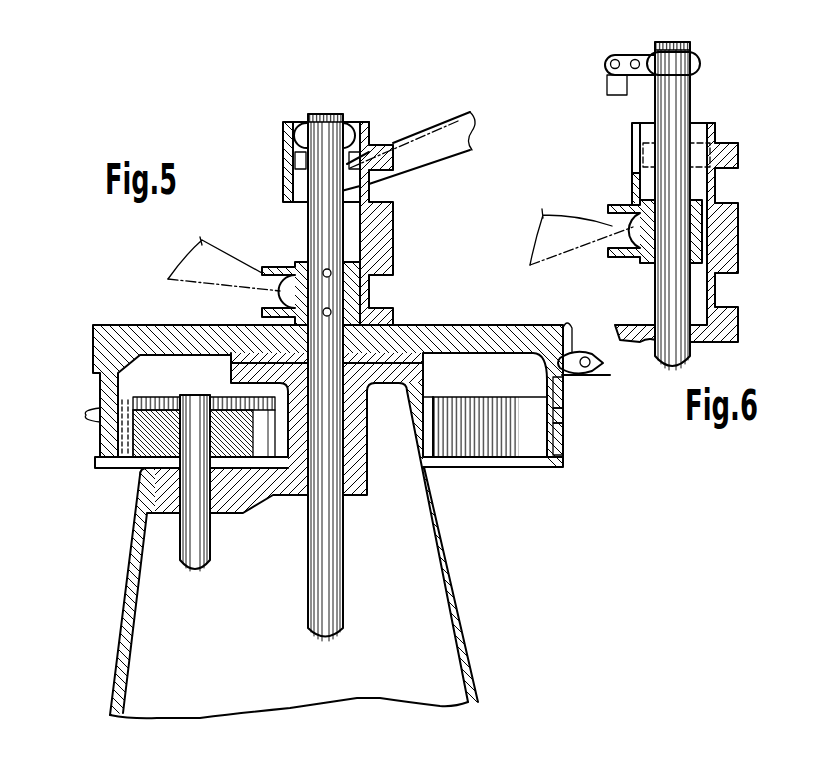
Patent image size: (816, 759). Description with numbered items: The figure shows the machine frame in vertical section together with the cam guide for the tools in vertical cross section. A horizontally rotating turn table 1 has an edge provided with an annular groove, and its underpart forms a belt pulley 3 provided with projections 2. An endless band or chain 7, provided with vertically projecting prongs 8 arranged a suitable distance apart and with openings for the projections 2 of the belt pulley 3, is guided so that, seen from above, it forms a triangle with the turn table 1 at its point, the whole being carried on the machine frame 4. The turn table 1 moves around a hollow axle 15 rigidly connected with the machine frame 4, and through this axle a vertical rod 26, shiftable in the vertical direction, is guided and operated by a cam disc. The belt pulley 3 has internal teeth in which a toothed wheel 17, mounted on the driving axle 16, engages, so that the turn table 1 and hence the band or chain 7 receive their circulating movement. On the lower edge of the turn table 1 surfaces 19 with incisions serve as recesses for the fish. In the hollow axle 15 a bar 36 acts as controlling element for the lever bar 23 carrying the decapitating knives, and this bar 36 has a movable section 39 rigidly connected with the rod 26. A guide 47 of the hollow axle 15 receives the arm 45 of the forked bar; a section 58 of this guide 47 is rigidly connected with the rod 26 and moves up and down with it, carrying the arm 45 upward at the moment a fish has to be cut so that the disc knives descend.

In FIG. 5, the turn table 1 is at (125, 338).
In FIG. 5, the projections 2 is at (88, 418).
In FIG. 5, the belt pulley 3 is at (106, 437).
In FIG. 5, the machine frame 4 is at (127, 640).
In FIG. 5, the endless band or chain 7 is at (567, 442).
In FIG. 5, the prongs 8 is at (568, 321).
In FIG. 5, the hollow axle 15 is at (380, 237).
In FIG. 6, the hollow axle 15 is at (627, 325).
In FIG. 5, the axle 16 is at (197, 545).
In FIG. 5, the toothed wheel 17 is at (158, 381).
In FIG. 5, the surfaces 19 is at (603, 377).
In FIG. 5, the lever bar 23 is at (423, 137).
In FIG. 5, the vertical rod 26 is at (325, 218).
In FIG. 6, the vertical rod 26 is at (673, 90).
In FIG. 5, the bar 36 is at (378, 147).
In FIG. 6, the bar 36 is at (717, 144).
In FIG. 6, the movable section 39 is at (610, 83).
In FIG. 5, the arm 45 is at (258, 288).
In FIG. 6, the arm 45 is at (598, 223).
In FIG. 5, the guide 47 is at (370, 292).
In FIG. 6, the guide 47 is at (715, 290).
In FIG. 5, the section 58 is at (267, 259).
In FIG. 6, the section 58 is at (617, 258).